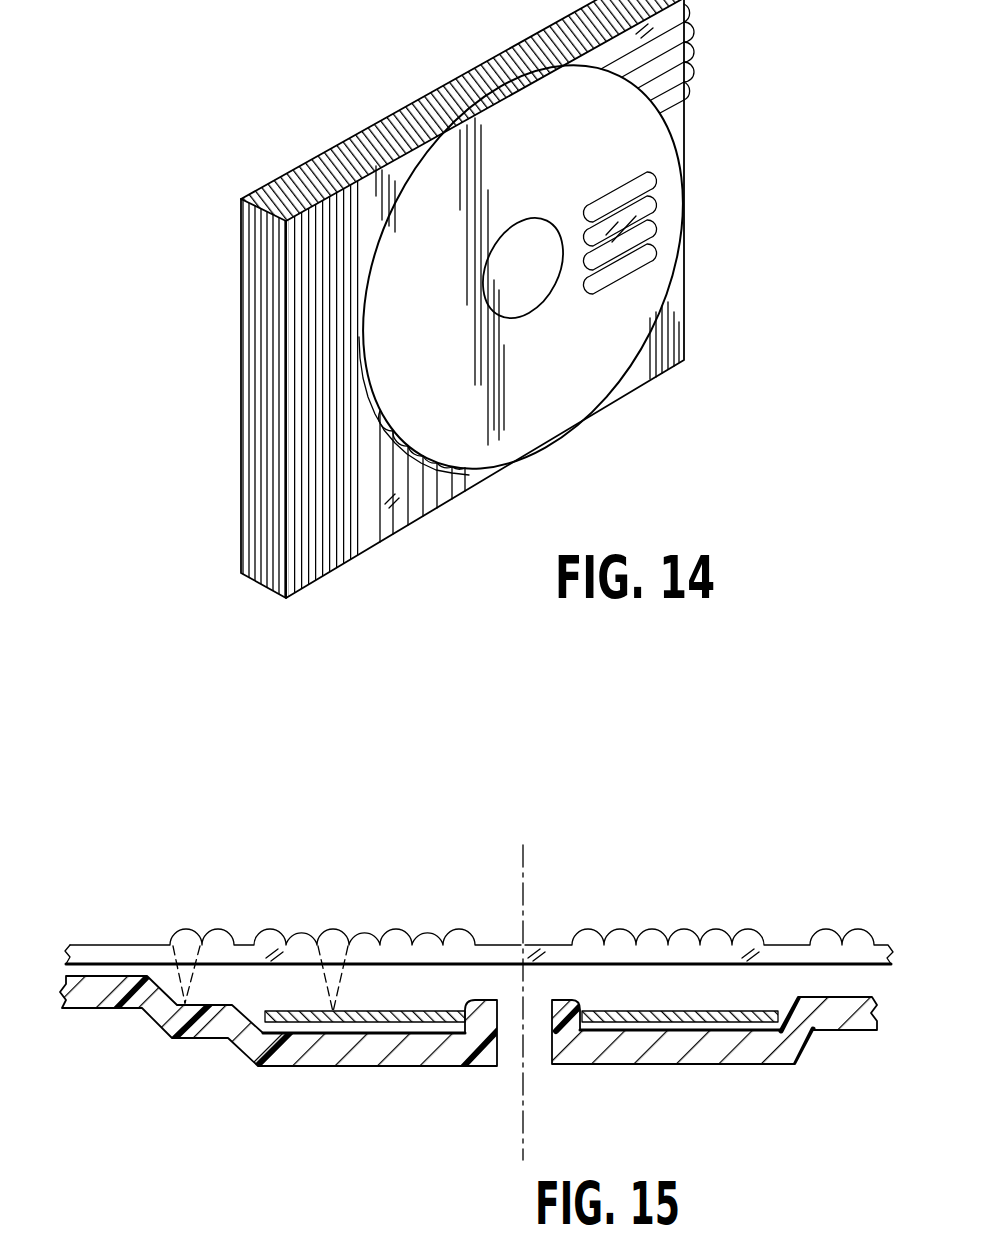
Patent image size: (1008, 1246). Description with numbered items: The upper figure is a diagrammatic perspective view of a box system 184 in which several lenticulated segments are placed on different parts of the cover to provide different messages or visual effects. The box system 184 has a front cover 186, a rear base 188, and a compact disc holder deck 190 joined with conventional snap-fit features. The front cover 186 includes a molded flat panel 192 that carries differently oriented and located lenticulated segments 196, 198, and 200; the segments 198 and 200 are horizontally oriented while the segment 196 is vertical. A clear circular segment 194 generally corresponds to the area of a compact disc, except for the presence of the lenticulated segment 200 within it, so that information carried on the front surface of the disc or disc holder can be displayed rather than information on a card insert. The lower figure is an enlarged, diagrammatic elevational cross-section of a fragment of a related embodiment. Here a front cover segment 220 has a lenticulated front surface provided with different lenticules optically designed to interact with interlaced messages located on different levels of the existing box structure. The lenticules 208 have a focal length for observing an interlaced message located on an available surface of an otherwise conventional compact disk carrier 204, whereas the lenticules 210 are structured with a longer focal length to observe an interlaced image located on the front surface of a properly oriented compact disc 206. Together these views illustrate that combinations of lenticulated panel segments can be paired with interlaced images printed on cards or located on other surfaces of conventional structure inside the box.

In FIG. 14, the box system 184 is at (252, 82).
In FIG. 14, the front cover 186 is at (449, 90).
In FIG. 14, the rear base 188 is at (230, 362).
In FIG. 14, the compact disc holder deck 190 is at (325, 540).
In FIG. 14, the molded flat panel 192 is at (668, 318).
In FIG. 14, the clear circular segment 194 is at (640, 140).
In FIG. 14, the lenticulated segment 196 is at (415, 497).
In FIG. 14, the lenticulated segment 198 is at (662, 58).
In FIG. 14, the lenticulated segment 200 is at (632, 231).
In FIG. 15, the compact disk carrier 204 is at (380, 1050).
In FIG. 15, the compact disc 206 is at (390, 1011).
In FIG. 15, the lenticules 208 is at (178, 944).
In FIG. 15, the lenticules 210 is at (330, 944).
In FIG. 15, the front cover segment 220 is at (118, 935).